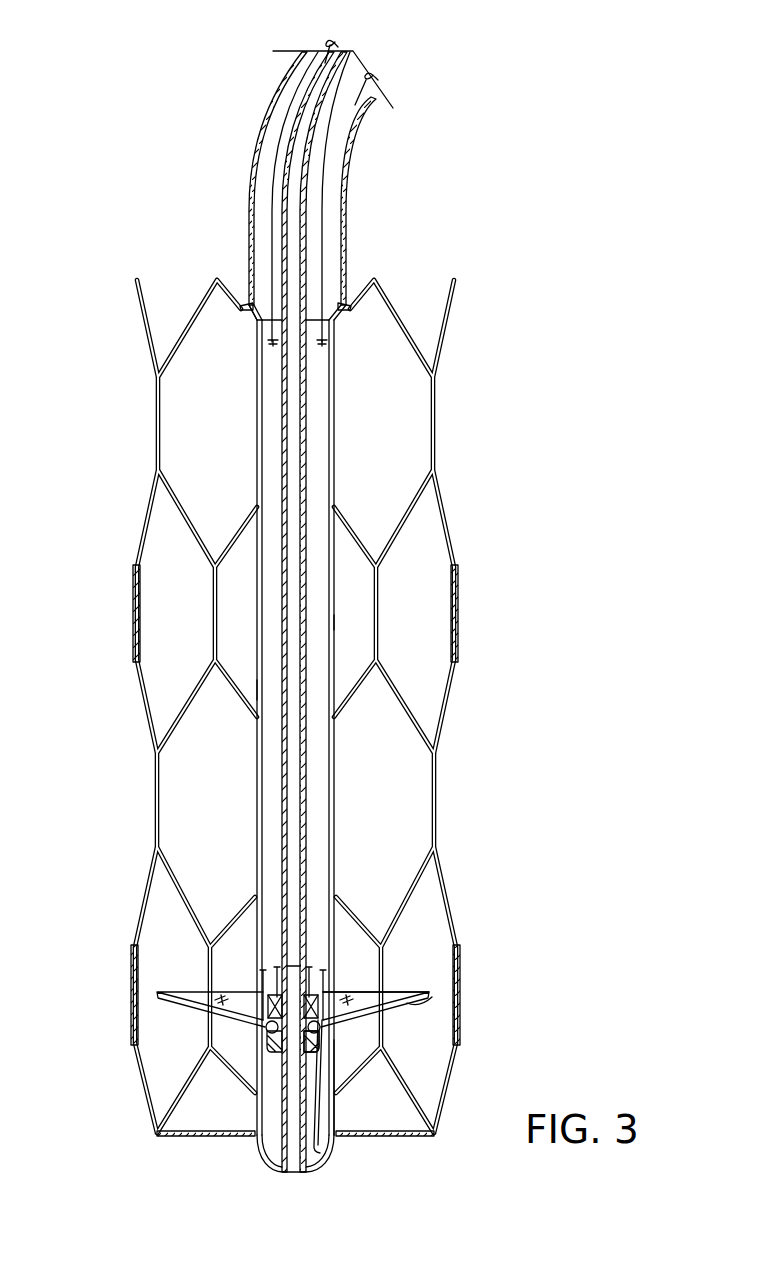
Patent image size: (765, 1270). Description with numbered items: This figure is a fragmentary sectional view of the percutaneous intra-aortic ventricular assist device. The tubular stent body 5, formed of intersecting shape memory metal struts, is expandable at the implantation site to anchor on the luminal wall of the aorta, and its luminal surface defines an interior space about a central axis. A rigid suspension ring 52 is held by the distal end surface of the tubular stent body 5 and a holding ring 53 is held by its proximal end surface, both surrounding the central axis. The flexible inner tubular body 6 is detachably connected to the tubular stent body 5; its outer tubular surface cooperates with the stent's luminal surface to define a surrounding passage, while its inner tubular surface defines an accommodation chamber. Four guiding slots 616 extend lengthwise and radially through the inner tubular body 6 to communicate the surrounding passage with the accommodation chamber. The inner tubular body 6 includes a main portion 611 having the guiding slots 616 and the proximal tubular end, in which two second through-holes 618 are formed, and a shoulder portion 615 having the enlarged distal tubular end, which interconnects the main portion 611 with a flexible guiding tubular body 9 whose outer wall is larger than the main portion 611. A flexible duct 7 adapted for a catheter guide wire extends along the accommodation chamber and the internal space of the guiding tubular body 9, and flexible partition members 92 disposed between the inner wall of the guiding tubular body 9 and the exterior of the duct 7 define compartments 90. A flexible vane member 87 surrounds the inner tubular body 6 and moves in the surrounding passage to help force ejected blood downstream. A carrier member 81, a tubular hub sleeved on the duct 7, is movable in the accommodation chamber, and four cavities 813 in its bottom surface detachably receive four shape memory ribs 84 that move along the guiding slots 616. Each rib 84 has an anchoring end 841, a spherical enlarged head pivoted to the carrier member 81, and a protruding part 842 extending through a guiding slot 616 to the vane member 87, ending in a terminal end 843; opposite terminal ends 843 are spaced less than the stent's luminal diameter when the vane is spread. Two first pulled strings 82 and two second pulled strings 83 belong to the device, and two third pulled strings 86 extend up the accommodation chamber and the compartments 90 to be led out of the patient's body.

The tubular stent body 5 is at (160, 480).
The inner tubular body 6 is at (340, 655).
The duct 7 is at (307, 450).
The guiding tubular body 9 is at (246, 187).
The suspension ring 52 is at (253, 313).
The holding ring 53 is at (255, 1137).
The carrier member 81 is at (266, 1000).
The first pulled strings 82 is at (284, 966).
The second pulled strings 83 is at (332, 1113).
The ribs 84 is at (172, 985).
The third pulled strings 86 is at (262, 978).
The vane member 87 is at (380, 998).
The compartments 90 is at (338, 47).
The partition members 92 is at (287, 113).
The main portion 611 is at (257, 603).
The shoulder portion 615 is at (252, 321).
The guiding slots 616 is at (333, 622).
The second through-holes 618 is at (320, 1152).
The cavities 813 is at (265, 1040).
The anchoring end 841 is at (330, 1027).
The protruding part 842 is at (330, 1043).
The terminal end 843 is at (410, 1003).